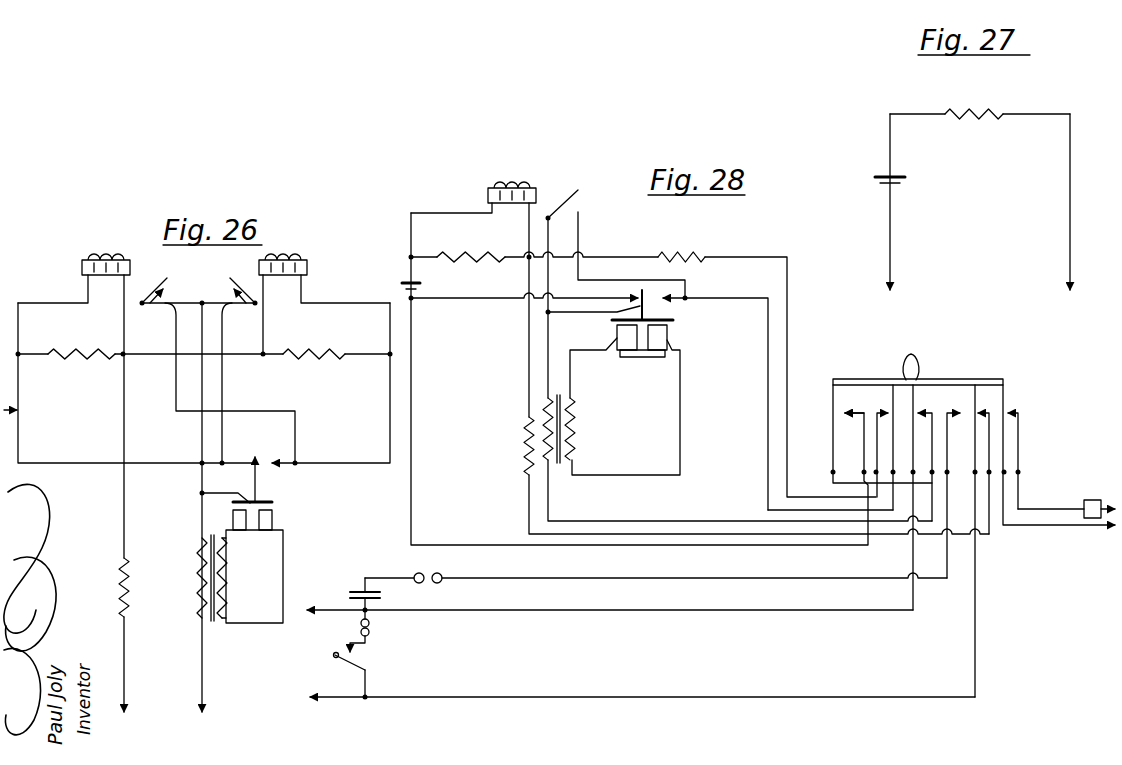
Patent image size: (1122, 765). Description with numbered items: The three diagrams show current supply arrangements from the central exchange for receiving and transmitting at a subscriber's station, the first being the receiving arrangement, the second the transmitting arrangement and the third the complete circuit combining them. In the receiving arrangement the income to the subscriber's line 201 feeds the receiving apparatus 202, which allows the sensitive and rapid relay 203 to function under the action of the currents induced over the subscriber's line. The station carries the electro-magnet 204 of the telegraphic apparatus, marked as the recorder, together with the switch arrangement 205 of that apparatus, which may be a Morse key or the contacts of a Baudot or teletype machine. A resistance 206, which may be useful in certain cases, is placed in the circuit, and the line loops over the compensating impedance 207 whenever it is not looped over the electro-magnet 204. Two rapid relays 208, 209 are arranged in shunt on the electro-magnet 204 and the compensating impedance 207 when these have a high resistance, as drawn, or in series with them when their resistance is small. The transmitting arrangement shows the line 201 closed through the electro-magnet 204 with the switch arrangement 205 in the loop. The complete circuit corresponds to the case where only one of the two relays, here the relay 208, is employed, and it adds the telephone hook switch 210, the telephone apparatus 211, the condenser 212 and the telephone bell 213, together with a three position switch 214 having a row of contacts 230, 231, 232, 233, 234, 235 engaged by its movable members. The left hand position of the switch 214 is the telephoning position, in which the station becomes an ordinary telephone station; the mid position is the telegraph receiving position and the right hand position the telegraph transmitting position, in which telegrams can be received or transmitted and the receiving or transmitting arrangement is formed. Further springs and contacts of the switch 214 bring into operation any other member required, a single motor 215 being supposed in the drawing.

In FIG. 26, the income to the subscriber's line 201 is at (217, 517).
In FIG. 27, the income to the subscriber's line 201 is at (980, 203).
In FIG. 26, the receiving apparatus 202 is at (240, 576).
In FIG. 28, the receiving apparatus 202 is at (560, 470).
In FIG. 26, the sensitive and rapid relay 203 is at (277, 517).
In FIG. 28, the sensitive and rapid relay 203 is at (666, 340).
In FIG. 26, the electro-magnet of the telegraphic apparatus 204 is at (77, 352).
In FIG. 27, the electro-magnet of the telegraphic apparatus 204 is at (970, 112).
In FIG. 28, the electro-magnet of the telegraphic apparatus 204 is at (471, 269).
In FIG. 26, the switch arrangement of the apparatus 205 is at (198, 348).
In FIG. 27, the switch arrangement of the apparatus 205 is at (898, 180).
In FIG. 28, the switch arrangement of the apparatus 205 is at (386, 286).
In FIG. 26, the resistance 206 is at (100, 493).
In FIG. 28, the resistance 206 is at (504, 339).
In FIG. 26, the compensating impedance 207 is at (315, 359).
In FIG. 28, the compensating impedance 207 is at (670, 244).
In FIG. 26, the rapid relay 208 is at (106, 249).
In FIG. 28, the rapid relay 208 is at (486, 195).
In FIG. 26, the rapid relay 209 is at (290, 252).
In FIG. 28, the telephone hook switch 210 is at (373, 669).
In FIG. 28, the telephone apparatus 211 is at (387, 630).
In FIG. 28, the condenser 212 is at (387, 600).
In FIG. 28, the telephone bell 213 is at (403, 566).
In FIG. 28, the three position switch 214 is at (940, 378).
In FIG. 28, the motor 215 is at (1059, 469).
In FIG. 28, the contact 230 is at (968, 408).
In FIG. 28, the contact 231 is at (921, 403).
In FIG. 28, the contact 232 is at (1002, 381).
In FIG. 28, the contact 233 is at (1008, 415).
In FIG. 28, the contact 234 is at (884, 400).
In FIG. 28, the contact 235 is at (842, 402).